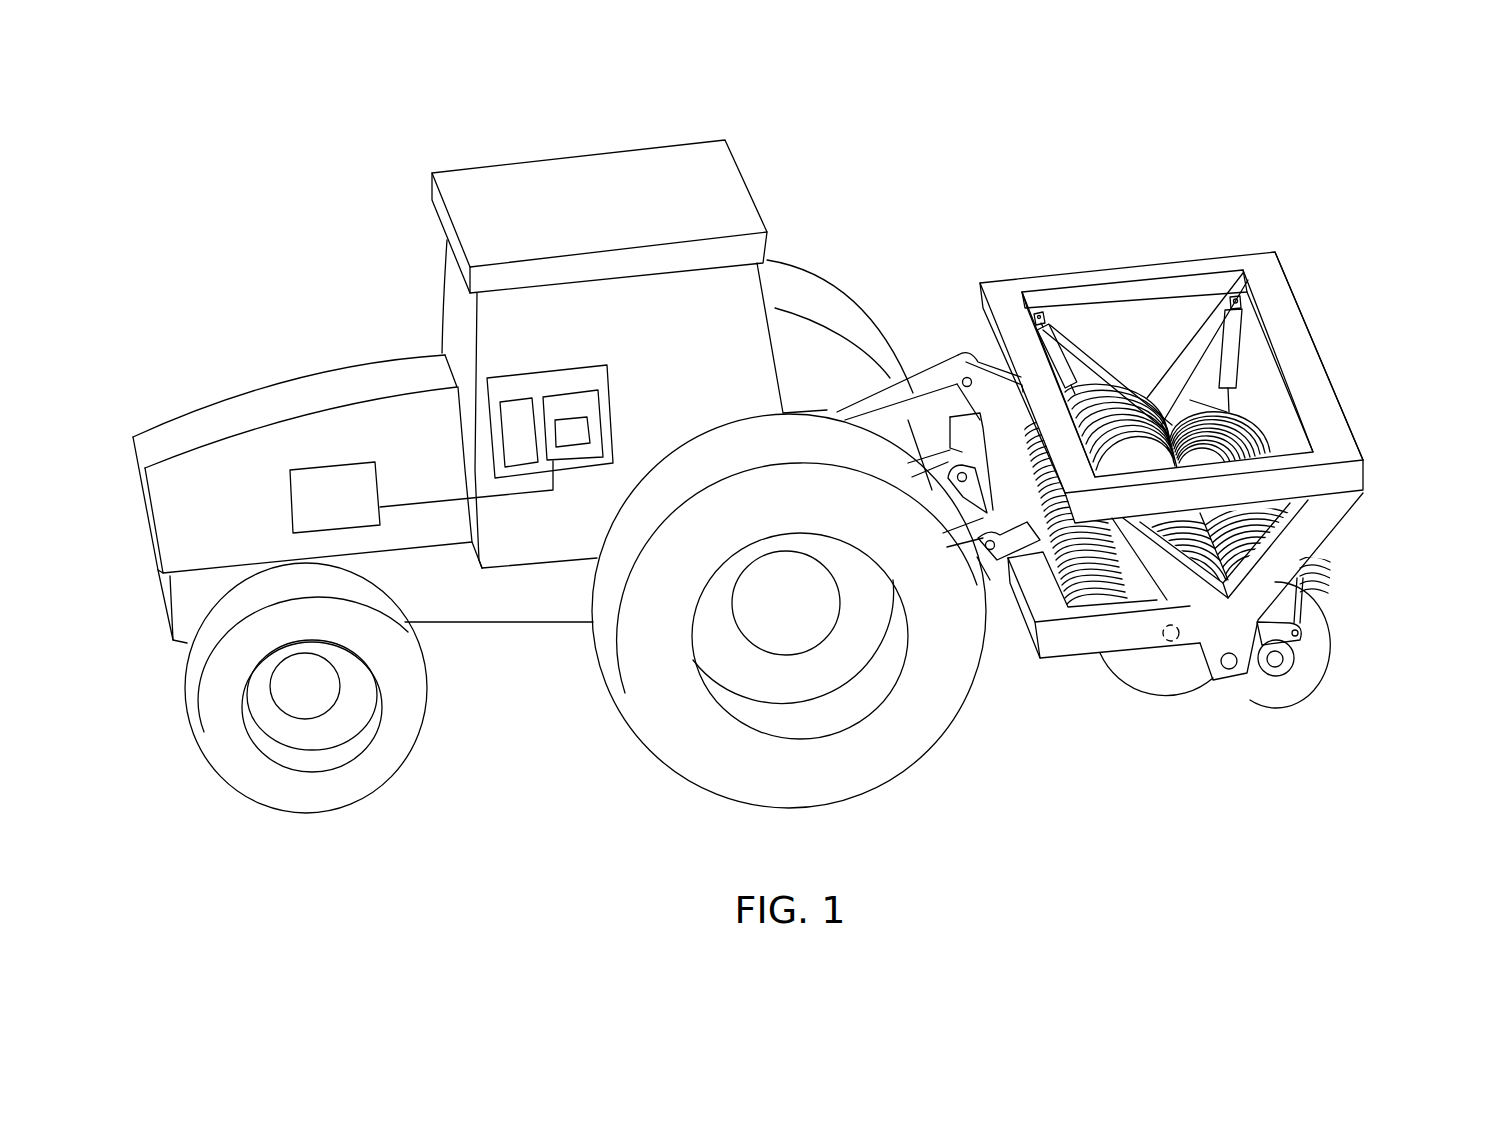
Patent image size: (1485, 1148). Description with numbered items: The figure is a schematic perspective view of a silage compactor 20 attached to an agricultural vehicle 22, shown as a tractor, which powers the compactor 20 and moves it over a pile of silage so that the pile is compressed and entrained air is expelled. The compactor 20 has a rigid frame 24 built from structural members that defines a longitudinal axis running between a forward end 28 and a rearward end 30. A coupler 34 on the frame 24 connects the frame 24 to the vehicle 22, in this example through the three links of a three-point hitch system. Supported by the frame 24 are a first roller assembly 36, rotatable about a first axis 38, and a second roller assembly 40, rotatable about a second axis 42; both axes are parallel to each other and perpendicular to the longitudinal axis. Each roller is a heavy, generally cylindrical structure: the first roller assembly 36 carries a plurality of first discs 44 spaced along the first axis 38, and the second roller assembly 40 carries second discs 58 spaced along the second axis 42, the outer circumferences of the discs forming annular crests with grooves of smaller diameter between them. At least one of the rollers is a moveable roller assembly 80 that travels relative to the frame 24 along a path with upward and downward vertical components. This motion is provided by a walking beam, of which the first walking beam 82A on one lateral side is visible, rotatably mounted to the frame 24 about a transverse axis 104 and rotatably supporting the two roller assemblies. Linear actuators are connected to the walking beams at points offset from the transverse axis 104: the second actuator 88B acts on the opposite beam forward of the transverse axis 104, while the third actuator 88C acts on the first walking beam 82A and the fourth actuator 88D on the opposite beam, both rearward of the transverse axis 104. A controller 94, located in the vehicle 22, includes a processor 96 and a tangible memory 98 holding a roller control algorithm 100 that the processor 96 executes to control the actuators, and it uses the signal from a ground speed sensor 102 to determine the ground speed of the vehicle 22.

The compactor 20 is at (1133, 222).
The agricultural vehicle 22 is at (593, 153).
The frame 24 is at (1200, 265).
The forward end 28 is at (985, 312).
The rearward end 30 is at (1320, 348).
The coupler 34 is at (1007, 447).
The first roller assembly 36 is at (1137, 667).
The first axis 38 is at (1173, 641).
The second roller assembly 40 is at (1317, 643).
The second axis 42 is at (1280, 664).
The first discs 44 is at (1133, 430).
The second discs 58 is at (1298, 431).
The moveable roller assembly 80 is at (1264, 683).
The first walking beam 82A is at (1260, 663).
The second actuator 88B is at (1039, 314).
The third actuator 88C is at (1318, 601).
The fourth actuator 88D is at (1233, 363).
The controller 94 is at (551, 392).
The processor 96 is at (515, 437).
The memory 98 is at (577, 403).
The roller control algorithm 100 is at (577, 430).
The ground speed sensor 102 is at (300, 498).
The transverse axis 104 is at (1232, 669).